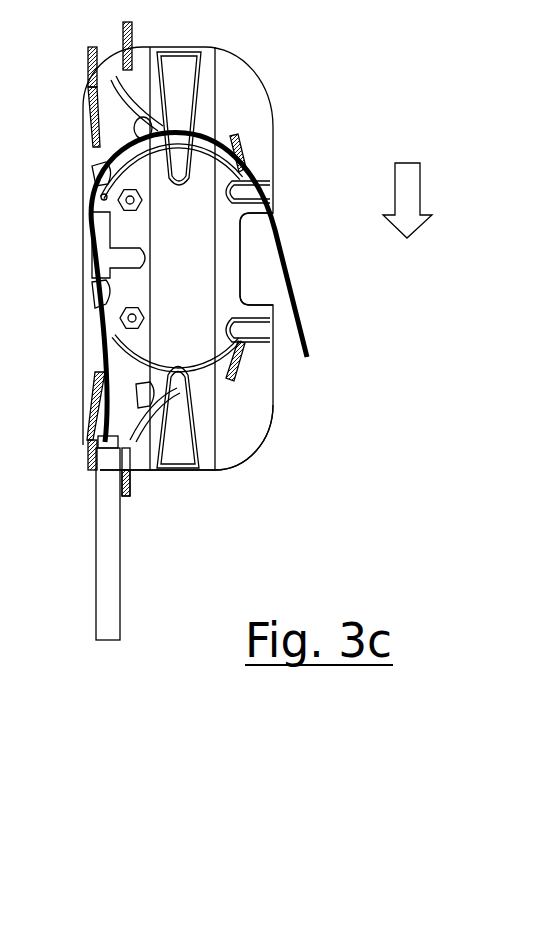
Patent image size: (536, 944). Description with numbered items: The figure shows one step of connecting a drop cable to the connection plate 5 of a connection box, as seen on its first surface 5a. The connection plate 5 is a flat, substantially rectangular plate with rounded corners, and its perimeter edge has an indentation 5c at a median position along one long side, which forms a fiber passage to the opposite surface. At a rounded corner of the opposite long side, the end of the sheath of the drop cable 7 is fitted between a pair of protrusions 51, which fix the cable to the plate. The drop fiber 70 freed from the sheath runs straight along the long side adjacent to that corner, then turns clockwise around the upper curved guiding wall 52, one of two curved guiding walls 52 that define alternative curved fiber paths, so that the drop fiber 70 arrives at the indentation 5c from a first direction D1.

The connection plate 5 is at (289, 66).
The first surface 5a is at (262, 448).
The indentation 5c is at (241, 262).
The curved guiding walls 52 is at (241, 168).
The drop fiber 70 is at (303, 325).
The protrusions 51 is at (92, 465).
The drop cable 7 is at (120, 577).
The first direction D1 is at (410, 163).